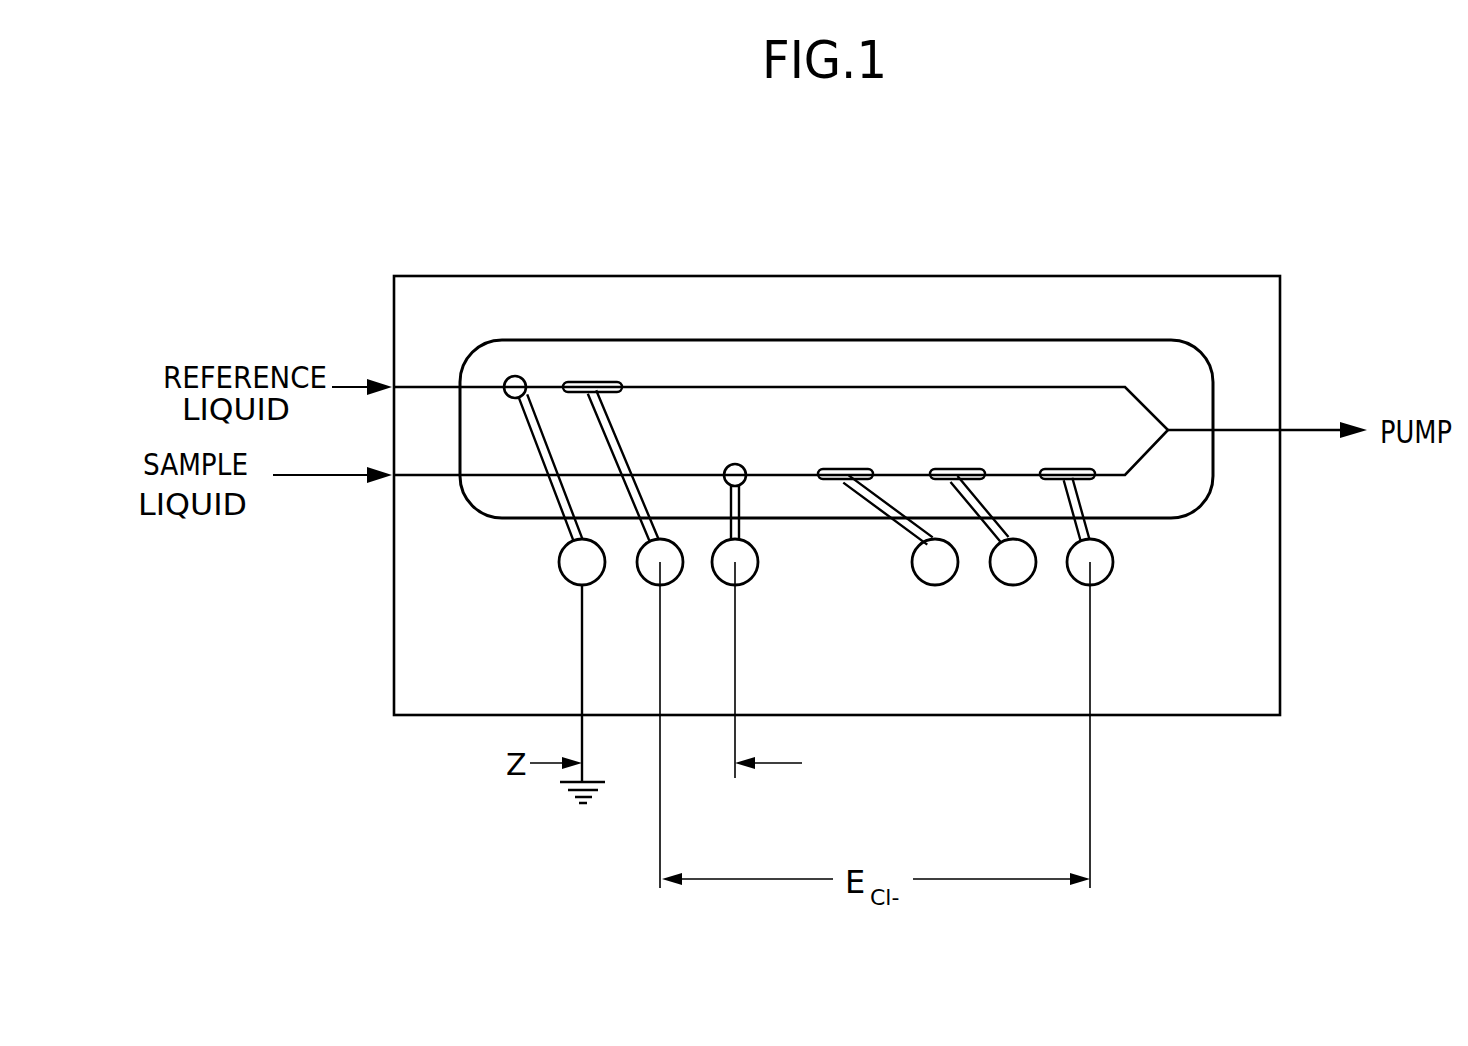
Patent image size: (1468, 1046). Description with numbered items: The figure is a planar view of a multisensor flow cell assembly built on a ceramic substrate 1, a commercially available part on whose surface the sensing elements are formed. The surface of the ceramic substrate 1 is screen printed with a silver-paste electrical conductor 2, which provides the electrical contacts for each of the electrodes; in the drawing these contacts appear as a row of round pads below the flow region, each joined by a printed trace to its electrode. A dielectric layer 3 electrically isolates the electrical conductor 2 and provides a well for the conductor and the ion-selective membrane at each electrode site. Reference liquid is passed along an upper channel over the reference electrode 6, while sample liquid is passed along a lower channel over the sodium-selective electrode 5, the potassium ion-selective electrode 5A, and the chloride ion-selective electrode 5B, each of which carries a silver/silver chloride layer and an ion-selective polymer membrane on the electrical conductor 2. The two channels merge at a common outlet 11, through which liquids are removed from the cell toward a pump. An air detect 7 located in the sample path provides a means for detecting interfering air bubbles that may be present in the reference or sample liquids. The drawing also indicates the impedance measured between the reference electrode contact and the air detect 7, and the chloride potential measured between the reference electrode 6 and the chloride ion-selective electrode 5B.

The ceramic substrate 1 is at (1236, 276).
The electrical conductor 2 is at (1105, 582).
The dielectric layer 3 is at (530, 340).
The sodium-selective electrode 5 is at (847, 450).
The potassium ion-selective electrode 5A is at (959, 450).
The chloride ion-selective electrode 5B is at (1065, 450).
The reference electrode 6 is at (592, 370).
The air detect 7 is at (736, 462).
The common outlet 11 is at (1175, 440).